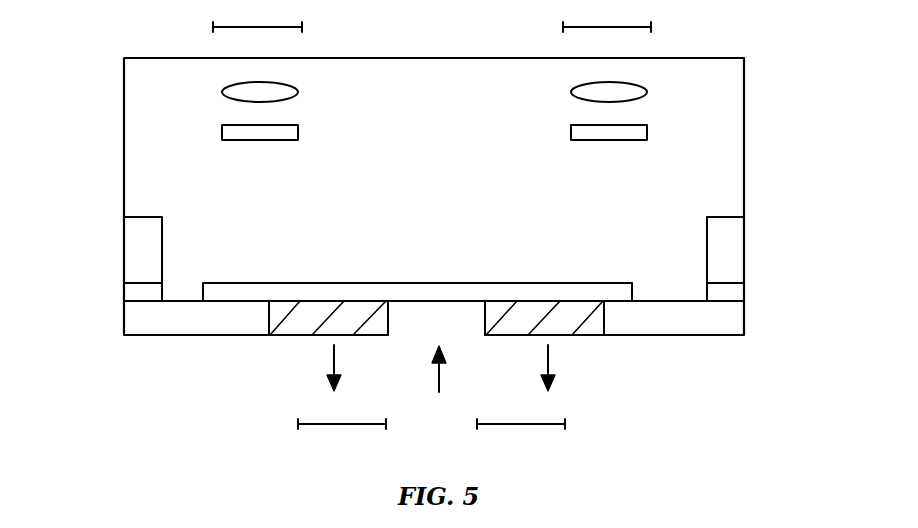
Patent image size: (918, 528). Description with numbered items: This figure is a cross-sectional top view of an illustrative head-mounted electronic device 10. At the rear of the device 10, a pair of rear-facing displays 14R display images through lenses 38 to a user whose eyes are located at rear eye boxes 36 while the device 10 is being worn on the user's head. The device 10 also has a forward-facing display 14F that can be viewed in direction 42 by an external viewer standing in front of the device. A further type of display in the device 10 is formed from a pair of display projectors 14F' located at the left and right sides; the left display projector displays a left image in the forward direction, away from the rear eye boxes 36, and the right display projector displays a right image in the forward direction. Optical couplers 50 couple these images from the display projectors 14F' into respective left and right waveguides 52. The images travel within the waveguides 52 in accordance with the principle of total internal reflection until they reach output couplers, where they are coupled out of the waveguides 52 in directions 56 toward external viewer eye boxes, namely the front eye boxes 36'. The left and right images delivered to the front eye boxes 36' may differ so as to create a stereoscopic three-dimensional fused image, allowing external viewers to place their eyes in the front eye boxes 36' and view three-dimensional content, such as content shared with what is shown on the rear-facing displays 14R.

The electronic device 10 is at (744, 100).
The rear eye boxes 36 is at (432, 27).
The lenses 38 is at (298, 92).
The rear-facing displays 14R is at (298, 132).
The forward-facing display 14F is at (417, 263).
The display projectors 14F' is at (436, 250).
The optical couplers 50 is at (124, 292).
The waveguides 52 is at (124, 321).
The directions 56 is at (332, 361).
The direction 42 is at (442, 370).
The front eye boxes 36' is at (431, 423).